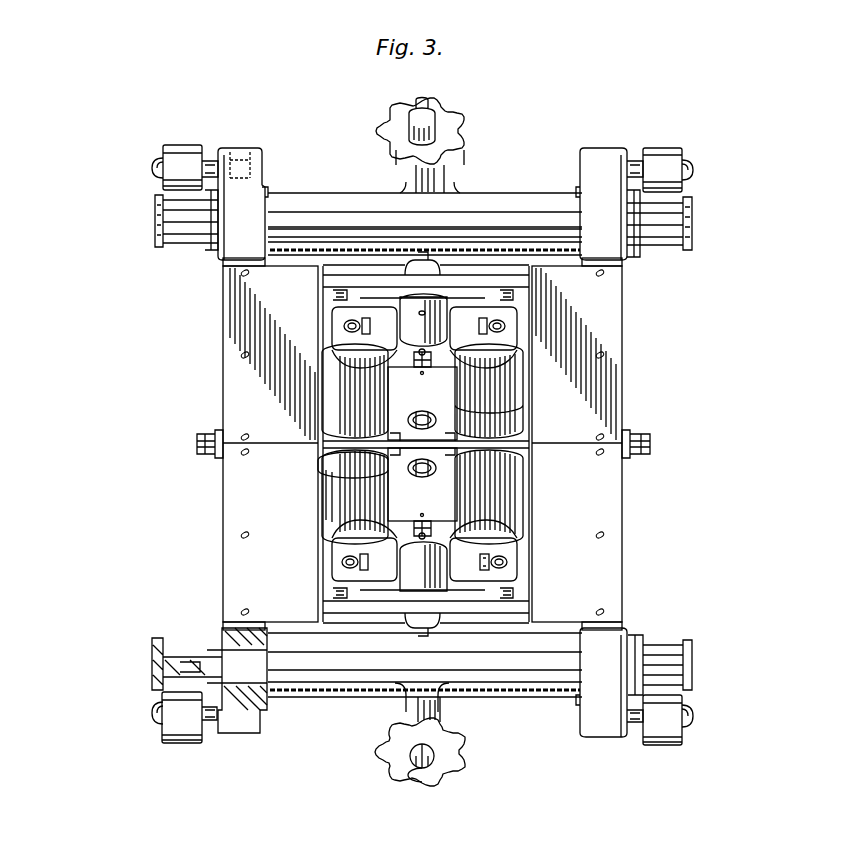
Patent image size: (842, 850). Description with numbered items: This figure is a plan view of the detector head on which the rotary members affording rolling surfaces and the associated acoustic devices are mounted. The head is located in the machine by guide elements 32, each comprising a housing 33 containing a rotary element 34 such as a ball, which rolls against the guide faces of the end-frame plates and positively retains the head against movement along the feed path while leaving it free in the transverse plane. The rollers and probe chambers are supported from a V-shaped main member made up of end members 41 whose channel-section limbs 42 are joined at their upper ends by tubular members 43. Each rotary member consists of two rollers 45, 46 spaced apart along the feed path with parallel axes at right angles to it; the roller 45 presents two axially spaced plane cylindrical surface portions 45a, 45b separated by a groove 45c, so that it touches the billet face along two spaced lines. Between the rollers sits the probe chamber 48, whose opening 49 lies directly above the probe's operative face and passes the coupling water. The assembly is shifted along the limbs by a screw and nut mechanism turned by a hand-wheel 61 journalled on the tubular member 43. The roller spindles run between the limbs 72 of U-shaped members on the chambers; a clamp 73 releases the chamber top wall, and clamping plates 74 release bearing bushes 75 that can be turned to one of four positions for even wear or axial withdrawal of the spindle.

The guide element 32 is at (178, 148).
The housing 33 is at (183, 150).
The rotary element 34 is at (163, 167).
The end member 41 is at (622, 526).
The limb 42 is at (228, 265).
The tubular member 43 is at (540, 198).
The roller 45 is at (515, 385).
The surface portion 45a is at (330, 515).
The surface portion 45b is at (345, 450).
The groove 45c is at (340, 465).
The roller 46 is at (340, 377).
The chamber 48 is at (422, 403).
The opening 49 is at (422, 484).
The hand-wheel 61 is at (447, 128).
The limb 72 is at (334, 310).
The clamp 73 is at (413, 360).
The clamping plate 74 is at (369, 563).
The bearing bush 75 is at (505, 562).